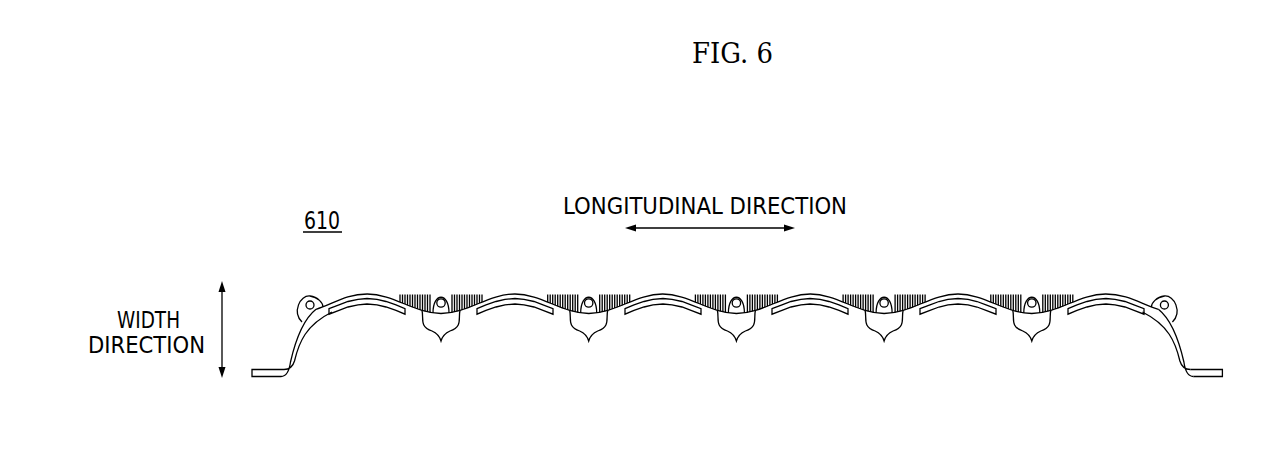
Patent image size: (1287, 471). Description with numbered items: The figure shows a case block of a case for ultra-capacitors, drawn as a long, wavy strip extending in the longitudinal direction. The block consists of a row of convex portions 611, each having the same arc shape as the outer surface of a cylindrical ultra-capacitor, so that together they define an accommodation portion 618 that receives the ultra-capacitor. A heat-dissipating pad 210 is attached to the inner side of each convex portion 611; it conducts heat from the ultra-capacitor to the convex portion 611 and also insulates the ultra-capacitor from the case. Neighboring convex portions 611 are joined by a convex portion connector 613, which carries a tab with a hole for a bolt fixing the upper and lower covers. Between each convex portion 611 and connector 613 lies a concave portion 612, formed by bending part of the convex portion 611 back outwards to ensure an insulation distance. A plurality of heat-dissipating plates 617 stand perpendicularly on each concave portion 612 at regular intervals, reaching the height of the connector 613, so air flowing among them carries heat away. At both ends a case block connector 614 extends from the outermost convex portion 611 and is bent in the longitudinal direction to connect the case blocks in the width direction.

The convex portion 611 is at (736, 317).
The concave portion 612 is at (736, 339).
The convex portion connector 613 is at (735, 289).
The case block connector 614 is at (733, 353).
The heat-dissipating plate 617 is at (400, 294).
The accommodation portion 618 is at (757, 361).
The heat-dissipating pad 210 is at (736, 326).